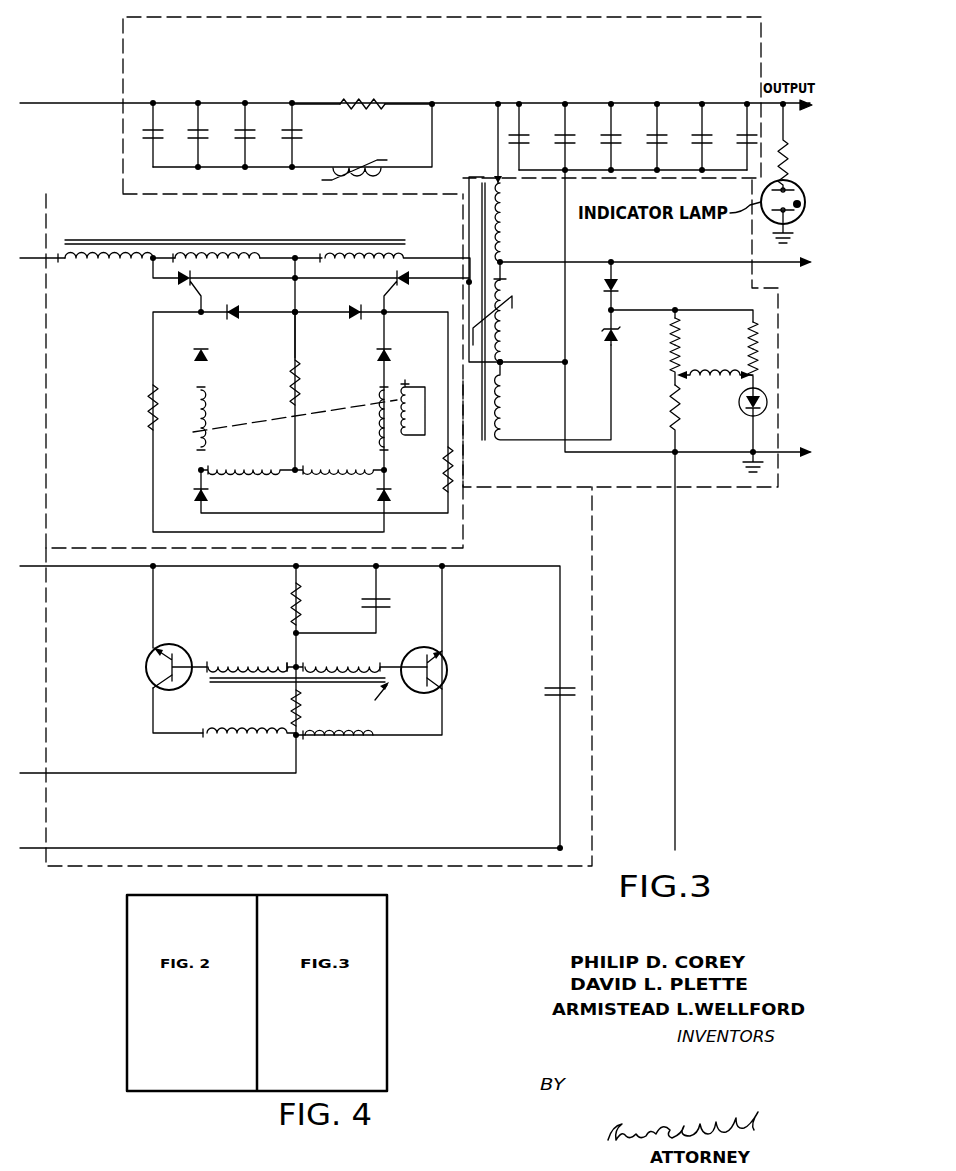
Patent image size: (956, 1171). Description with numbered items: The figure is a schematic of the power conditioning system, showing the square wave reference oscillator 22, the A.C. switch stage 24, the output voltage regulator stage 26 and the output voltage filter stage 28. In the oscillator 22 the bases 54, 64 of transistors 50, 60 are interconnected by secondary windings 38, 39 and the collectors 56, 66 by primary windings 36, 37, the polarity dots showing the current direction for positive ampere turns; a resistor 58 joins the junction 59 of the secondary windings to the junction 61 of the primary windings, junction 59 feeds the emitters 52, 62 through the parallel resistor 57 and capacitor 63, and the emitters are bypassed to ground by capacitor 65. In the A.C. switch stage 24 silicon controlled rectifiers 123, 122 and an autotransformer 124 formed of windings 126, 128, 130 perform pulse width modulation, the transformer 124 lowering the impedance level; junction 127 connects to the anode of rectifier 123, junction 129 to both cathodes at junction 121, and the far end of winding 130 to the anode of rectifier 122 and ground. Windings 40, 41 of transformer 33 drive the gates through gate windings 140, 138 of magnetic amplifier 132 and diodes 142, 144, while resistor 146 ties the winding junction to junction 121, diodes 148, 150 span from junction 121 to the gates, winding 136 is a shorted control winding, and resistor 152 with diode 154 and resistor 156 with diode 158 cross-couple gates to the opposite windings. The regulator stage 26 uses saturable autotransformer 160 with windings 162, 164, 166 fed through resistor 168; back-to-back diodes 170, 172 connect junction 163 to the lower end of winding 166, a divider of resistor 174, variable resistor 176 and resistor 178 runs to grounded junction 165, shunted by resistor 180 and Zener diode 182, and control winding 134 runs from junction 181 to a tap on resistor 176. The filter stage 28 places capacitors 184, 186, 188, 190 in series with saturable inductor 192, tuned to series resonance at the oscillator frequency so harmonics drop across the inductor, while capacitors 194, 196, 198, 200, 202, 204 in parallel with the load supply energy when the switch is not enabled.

The oscillator 22 is at (601, 664).
The A.C. switch stage 24 is at (463, 526).
The output voltage regulator stage 26 is at (714, 488).
The output voltage filter stage 28 is at (118, 62).
The transformer 33 is at (283, 579).
The primary winding 36 is at (234, 730).
The primary winding 37 is at (330, 732).
The secondary winding 38 is at (234, 658).
The secondary winding 39 is at (326, 666).
The winding 40 is at (255, 462).
The winding 41 is at (353, 462).
The transistor 50 is at (289, 591).
The emitter 52 is at (160, 644).
The base 54 is at (197, 656).
The collector 56 is at (155, 684).
The resistor 57 is at (301, 598).
The resistor 58 is at (286, 712).
The junction 59 is at (293, 664).
The transistor 60 is at (444, 669).
The junction 61 is at (303, 732).
The emitter 62 is at (442, 650).
The capacitor 63 is at (385, 599).
The base 64 is at (390, 662).
The capacitor 65 is at (550, 686).
The collector 66 is at (442, 686).
The junction 121 is at (294, 314).
The silicon controlled rectifier 122 is at (396, 278).
The silicon controlled rectifier 123 is at (176, 282).
The autotransformer 124 is at (267, 249).
The winding 126 is at (106, 260).
The junction 127 is at (153, 260).
The winding 128 is at (240, 258).
The junction 129 is at (291, 260).
The winding 130 is at (338, 260).
The magnetic amplifier 132 is at (276, 384).
The control winding 134 is at (712, 376).
The shorted control winding 136 is at (402, 384).
The gate winding 138 is at (379, 386).
The gate winding 140 is at (202, 406).
The diode 142 is at (204, 358).
The diode 144 is at (390, 356).
The resistor 146 is at (294, 355).
The diode 148 is at (234, 316).
The diode 150 is at (348, 314).
The resistor 152 is at (159, 402).
The diode 154 is at (376, 494).
The resistor 156 is at (444, 463).
The diode 158 is at (208, 494).
The saturable autotransformer 160 is at (542, 311).
The winding 162 is at (504, 212).
The junction 163 is at (502, 260).
The winding 164 is at (504, 330).
The junction 165 is at (502, 362).
The winding 166 is at (504, 408).
The resistor 168 is at (360, 108).
The diode 170 is at (604, 284).
The diode 172 is at (604, 334).
The resistor 174 is at (669, 336).
The variable resistor 176 is at (665, 371).
The resistor 178 is at (671, 416).
The resistor 180 is at (748, 338).
The junction 181 is at (747, 368).
The Zener diode 182 is at (739, 404).
The capacitor 184 is at (156, 126).
The capacitor 186 is at (201, 126).
The capacitor 188 is at (247, 126).
The capacitor 190 is at (294, 126).
The saturable inductor 192 is at (345, 168).
The capacitor 194 is at (510, 132).
The capacitor 196 is at (558, 130).
The capacitor 198 is at (602, 130).
The capacitor 200 is at (649, 130).
The capacitor 202 is at (694, 130).
The capacitor 204 is at (738, 130).